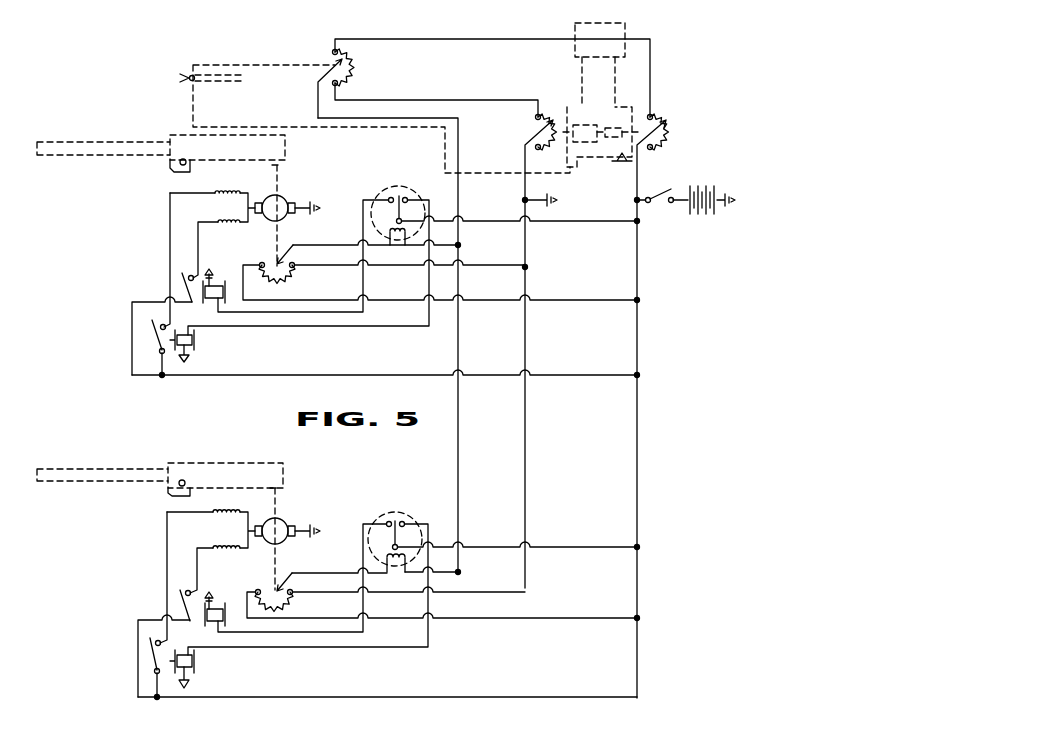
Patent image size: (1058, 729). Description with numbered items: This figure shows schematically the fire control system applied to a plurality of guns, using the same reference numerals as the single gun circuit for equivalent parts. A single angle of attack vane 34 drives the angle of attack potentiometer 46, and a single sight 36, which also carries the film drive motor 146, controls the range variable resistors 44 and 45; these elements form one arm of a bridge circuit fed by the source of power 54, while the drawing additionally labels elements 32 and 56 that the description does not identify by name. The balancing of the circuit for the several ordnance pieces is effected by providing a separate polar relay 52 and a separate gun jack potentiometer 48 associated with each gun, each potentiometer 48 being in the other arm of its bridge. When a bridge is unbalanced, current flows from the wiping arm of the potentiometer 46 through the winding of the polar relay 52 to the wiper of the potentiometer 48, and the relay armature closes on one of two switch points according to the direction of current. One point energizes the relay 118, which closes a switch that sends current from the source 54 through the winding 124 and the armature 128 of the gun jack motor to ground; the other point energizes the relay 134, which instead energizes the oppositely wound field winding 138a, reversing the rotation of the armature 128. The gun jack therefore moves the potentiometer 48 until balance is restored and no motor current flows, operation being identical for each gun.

The control member 32 is at (160, 114).
The angle of attack vane 34 is at (231, 84).
The sight 36 is at (625, 33).
The range variable resistor 44 is at (558, 117).
The range variable resistor 45 is at (671, 132).
The angle of attack potentiometer 46 is at (348, 72).
The gun jack potentiometer 48 is at (295, 278).
The polar relay 52 is at (402, 188).
The source of power 54 is at (704, 215).
The switch 56 is at (657, 192).
The relay 118 is at (196, 340).
The winding 124 is at (243, 183).
The armature 128 is at (286, 197).
The relay 134 is at (214, 286).
The field winding 138a is at (222, 231).
The film drive motor 146 is at (597, 118).